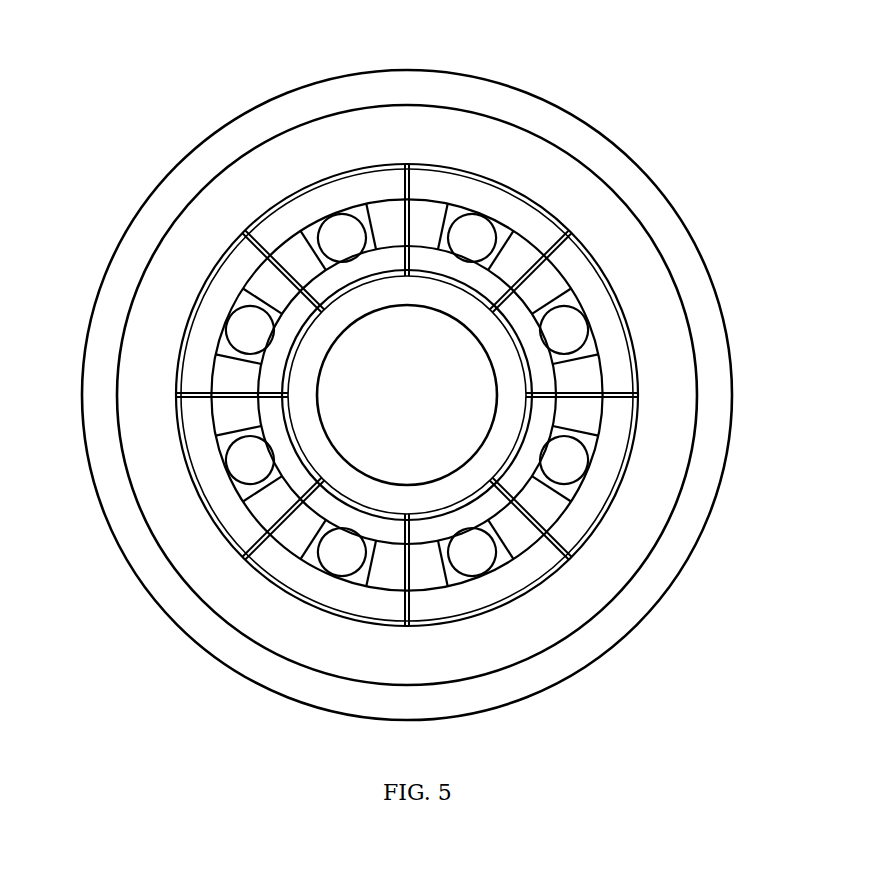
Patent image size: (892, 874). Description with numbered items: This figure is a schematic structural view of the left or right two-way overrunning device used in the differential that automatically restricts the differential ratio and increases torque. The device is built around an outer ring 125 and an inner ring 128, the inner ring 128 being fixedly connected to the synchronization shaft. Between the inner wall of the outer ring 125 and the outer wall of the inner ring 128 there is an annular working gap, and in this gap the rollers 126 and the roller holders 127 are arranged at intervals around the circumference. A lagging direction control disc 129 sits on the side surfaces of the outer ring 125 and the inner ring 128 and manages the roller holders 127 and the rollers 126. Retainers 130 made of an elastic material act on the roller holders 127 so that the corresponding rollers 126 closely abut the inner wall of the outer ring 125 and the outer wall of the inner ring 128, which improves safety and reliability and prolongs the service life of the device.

The outer ring 125 is at (643, 502).
The rollers 126 is at (250, 462).
The roller holders 127 is at (270, 288).
The inner ring 128 is at (365, 493).
The lagging direction control disc 129 is at (610, 170).
The retainers 130 is at (407, 185).